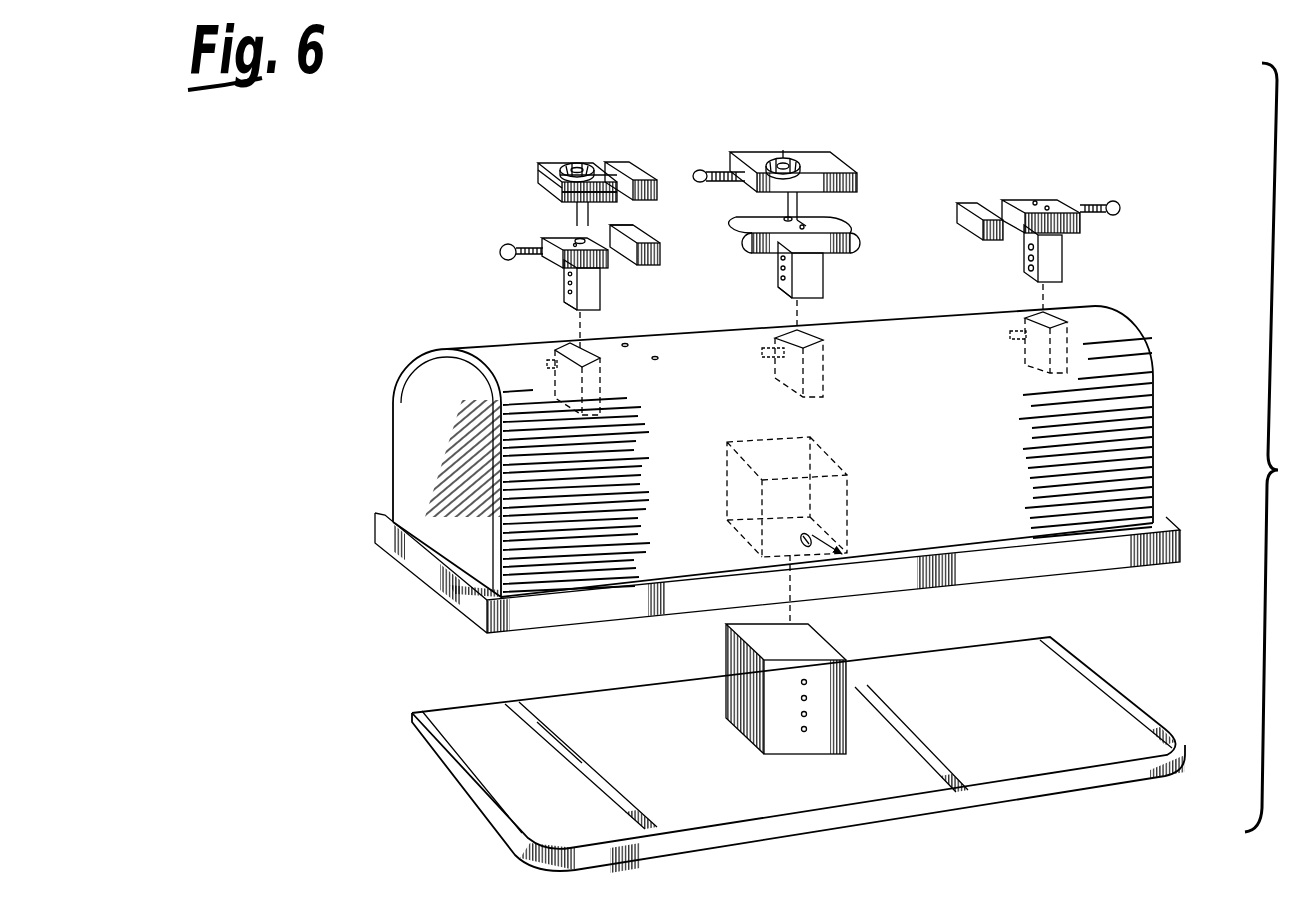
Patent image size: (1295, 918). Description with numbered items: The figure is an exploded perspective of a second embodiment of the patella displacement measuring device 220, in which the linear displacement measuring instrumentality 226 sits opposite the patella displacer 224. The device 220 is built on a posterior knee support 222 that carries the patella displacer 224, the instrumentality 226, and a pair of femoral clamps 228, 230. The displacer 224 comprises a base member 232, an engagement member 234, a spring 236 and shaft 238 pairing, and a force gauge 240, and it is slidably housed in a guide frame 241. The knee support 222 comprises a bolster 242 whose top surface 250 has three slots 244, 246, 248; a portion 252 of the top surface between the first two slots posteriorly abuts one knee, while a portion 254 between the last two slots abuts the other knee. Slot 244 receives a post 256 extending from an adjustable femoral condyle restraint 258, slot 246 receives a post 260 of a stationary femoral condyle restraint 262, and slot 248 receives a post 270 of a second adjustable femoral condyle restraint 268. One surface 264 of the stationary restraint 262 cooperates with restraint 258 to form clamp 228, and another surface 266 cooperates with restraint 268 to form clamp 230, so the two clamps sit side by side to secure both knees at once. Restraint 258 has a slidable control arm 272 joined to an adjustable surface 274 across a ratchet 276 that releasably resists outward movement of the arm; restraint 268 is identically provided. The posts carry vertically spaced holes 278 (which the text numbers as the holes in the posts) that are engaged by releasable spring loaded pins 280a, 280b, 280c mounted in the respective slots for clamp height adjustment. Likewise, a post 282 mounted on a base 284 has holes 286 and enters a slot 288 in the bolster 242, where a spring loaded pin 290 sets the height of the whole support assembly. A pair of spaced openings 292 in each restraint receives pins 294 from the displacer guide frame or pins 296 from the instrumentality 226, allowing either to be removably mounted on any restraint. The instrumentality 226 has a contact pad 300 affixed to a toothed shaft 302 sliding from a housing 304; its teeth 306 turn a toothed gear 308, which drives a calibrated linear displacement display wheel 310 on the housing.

The patella displacement measuring device 220 is at (338, 317).
The posterior knee support 222 is at (1182, 534).
The patella displacer 224 is at (582, 162).
The linear displacement measuring instrumentality 226 is at (858, 175).
The femoral clamp 228 is at (545, 243).
The femoral clamp 230 is at (1003, 180).
The base member 232 is at (565, 160).
The engagement member 234 is at (640, 178).
The spring 236 is at (595, 163).
The shaft 238 is at (610, 170).
The force gauge 240 is at (578, 160).
The guide frame 241 is at (560, 165).
The bolster 242 is at (413, 440).
The slot 244 is at (581, 348).
The slot 246 is at (824, 345).
The slot 248 is at (1060, 318).
The top surface 250 is at (655, 357).
The portion 252 is at (625, 344).
The portion 254 is at (930, 318).
The post 256 is at (601, 305).
The adjustable femoral condyle restraint 258 is at (601, 286).
The post 260 is at (824, 292).
The stationary femoral condyle restraint 262 is at (824, 262).
The surface 264 is at (634, 237).
The surface 266 is at (851, 240).
The second adjustable femoral condyle restraint 268 is at (1081, 205).
The post 270 is at (1063, 245).
The slidable control arm 272 is at (499, 252).
The adjustable surface 274 is at (658, 250).
The ratchet 276 is at (514, 256).
The contact pins 278 is at (568, 291).
The releasable spring loaded pin 280a is at (547, 363).
The releasable spring loaded pin 280b is at (762, 352).
The releasable spring loaded pin 280c is at (1010, 335).
The post 282 is at (847, 660).
The base 284 is at (1105, 705).
The holes 286 is at (800, 730).
The slot 288 is at (793, 468).
The spring loaded pin 290 is at (812, 533).
The spaced openings 292 is at (576, 206).
The pins 294 is at (560, 175).
The pins 296 is at (808, 212).
The contact pad 300 is at (700, 168).
The toothed shaft 302 is at (714, 170).
The housing 304 is at (790, 155).
The teeth 306 is at (735, 171).
The toothed gear 308 is at (845, 165).
The calibrated linear displacement display wheel 310 is at (801, 163).